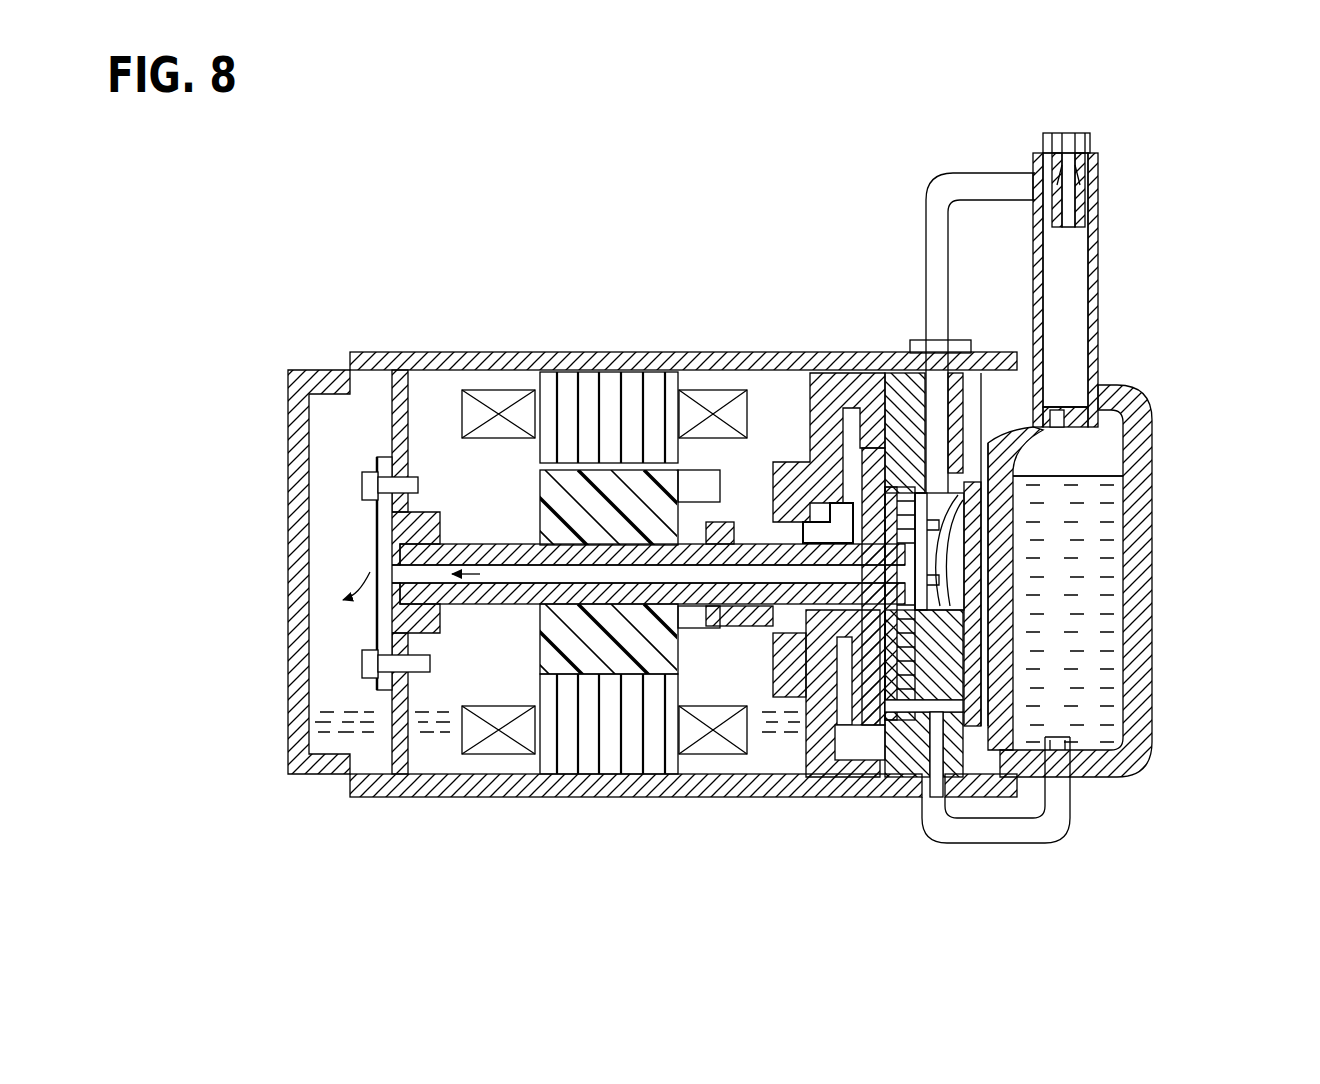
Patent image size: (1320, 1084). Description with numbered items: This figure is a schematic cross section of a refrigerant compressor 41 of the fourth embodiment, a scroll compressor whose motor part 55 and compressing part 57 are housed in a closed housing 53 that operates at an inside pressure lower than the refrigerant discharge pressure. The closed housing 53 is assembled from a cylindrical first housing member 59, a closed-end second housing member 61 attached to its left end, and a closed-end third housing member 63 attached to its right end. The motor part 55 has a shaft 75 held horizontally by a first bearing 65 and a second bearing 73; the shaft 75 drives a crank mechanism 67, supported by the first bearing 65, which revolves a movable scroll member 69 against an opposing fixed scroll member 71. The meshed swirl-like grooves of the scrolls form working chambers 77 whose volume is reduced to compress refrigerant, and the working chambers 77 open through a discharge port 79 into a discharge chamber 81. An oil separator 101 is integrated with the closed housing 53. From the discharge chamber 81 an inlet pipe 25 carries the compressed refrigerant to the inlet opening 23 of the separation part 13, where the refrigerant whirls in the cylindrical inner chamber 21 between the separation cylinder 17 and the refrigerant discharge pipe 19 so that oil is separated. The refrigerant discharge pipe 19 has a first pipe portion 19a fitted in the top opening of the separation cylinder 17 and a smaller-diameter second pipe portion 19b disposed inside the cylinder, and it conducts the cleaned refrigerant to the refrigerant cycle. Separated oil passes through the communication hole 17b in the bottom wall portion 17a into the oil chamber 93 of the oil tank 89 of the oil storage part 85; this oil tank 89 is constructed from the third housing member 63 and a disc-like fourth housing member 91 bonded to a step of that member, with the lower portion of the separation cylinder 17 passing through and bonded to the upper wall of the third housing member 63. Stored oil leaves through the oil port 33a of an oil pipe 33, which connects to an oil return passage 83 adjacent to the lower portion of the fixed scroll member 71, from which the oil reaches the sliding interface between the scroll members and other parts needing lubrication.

The separation part 13 is at (1138, 311).
The separation cylinder 17 is at (1098, 295).
The bottom wall portion 17a is at (1050, 425).
The communication hole 17b is at (1072, 408).
The refrigerant discharge pipe 19 is at (1122, 146).
The first pipe portion 19a is at (1093, 137).
The second pipe portion 19b is at (1095, 190).
The cylindrical inner chamber 21 is at (1093, 228).
The inlet opening 23 is at (1035, 192).
The inlet pipe 25 is at (960, 185).
The oil pipe 33 is at (1030, 830).
The oil port 33a is at (1055, 745).
The refrigerant compressor 41 is at (615, 305).
The closed housing 53 is at (480, 352).
The motor part 55 is at (530, 502).
The compressing part 57 is at (995, 553).
The first housing member 59 is at (392, 352).
The second housing member 61 is at (290, 392).
The third housing member 63 is at (1160, 632).
The first bearing 65 is at (752, 620).
The crank mechanism 67 is at (823, 503).
The movable scroll member 69 is at (871, 447).
The fixed scroll member 71 is at (899, 400).
The second bearing 73 is at (403, 528).
The shaft 75 is at (491, 597).
The working chambers 77 is at (899, 508).
The discharge port 79 is at (926, 604).
The discharge chamber 81 is at (946, 590).
The oil return passage 83 is at (933, 742).
The oil storage part 85 is at (1139, 581).
The oil tank 89 is at (1133, 655).
The fourth housing member 91 is at (992, 440).
The oil chamber 93 is at (1100, 570).
The oil separator 101 is at (1139, 421).